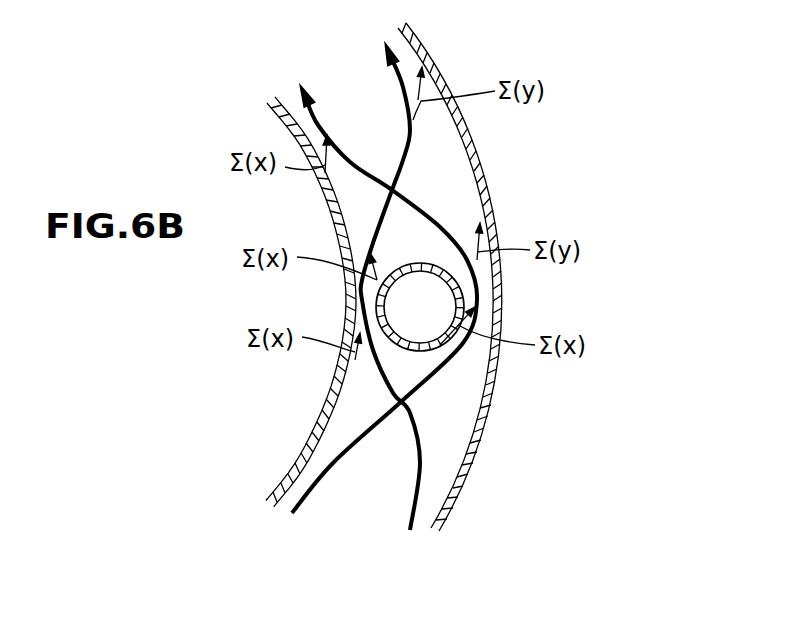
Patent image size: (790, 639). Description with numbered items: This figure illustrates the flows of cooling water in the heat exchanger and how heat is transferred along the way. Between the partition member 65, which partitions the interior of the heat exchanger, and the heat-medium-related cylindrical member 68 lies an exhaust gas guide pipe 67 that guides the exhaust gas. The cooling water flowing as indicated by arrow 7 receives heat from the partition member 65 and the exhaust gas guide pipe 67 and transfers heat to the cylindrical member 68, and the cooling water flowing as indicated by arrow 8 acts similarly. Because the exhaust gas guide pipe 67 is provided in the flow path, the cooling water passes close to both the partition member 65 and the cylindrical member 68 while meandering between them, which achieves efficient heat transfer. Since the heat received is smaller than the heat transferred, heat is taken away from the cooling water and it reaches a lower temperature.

The partition member 65 is at (325, 421).
The cylindrical member 68 is at (458, 456).
The exhaust gas guide pipe 67 is at (430, 352).
The arrow indicating cooling water flow 7 is at (392, 307).
The arrow indicating cooling water flow 8 is at (372, 318).